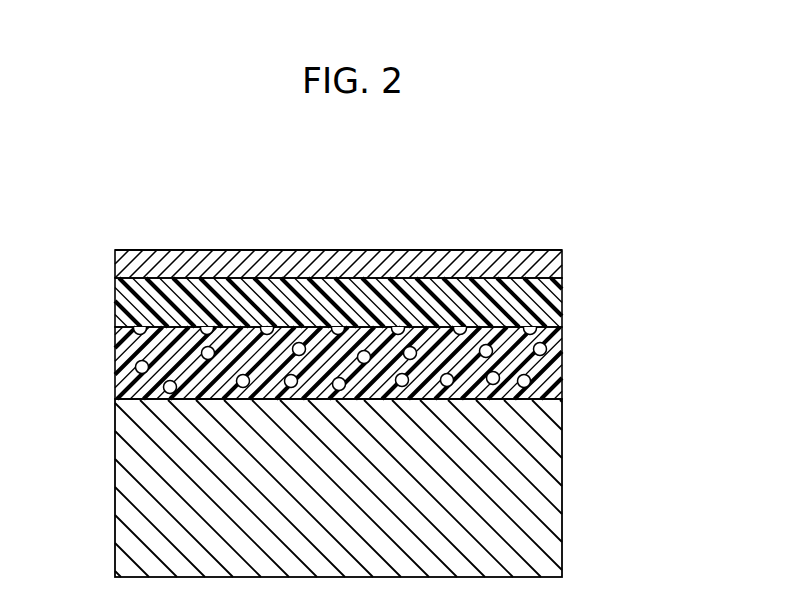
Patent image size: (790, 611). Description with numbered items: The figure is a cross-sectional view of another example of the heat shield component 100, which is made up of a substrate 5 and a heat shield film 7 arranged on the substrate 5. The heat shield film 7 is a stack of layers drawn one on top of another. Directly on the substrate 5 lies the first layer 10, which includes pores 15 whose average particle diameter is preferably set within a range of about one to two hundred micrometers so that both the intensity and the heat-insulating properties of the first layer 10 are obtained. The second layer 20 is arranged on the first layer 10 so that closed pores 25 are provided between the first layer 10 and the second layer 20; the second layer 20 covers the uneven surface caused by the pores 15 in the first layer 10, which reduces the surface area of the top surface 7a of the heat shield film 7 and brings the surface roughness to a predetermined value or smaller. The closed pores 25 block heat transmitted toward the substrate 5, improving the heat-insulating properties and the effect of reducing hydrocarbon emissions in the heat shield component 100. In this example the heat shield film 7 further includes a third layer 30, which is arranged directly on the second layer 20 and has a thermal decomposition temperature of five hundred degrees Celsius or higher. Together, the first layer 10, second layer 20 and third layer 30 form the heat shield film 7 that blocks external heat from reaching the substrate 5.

The heat shield component 100 is at (412, 213).
The heat shield film 7 is at (660, 240).
The top surface 7a is at (235, 250).
The third layer 30 is at (566, 262).
The second layer 20 is at (566, 300).
The first layer 10 is at (355, 385).
The closed pores 25 is at (150, 331).
The pores 15 is at (135, 364).
The substrate 5 is at (566, 482).